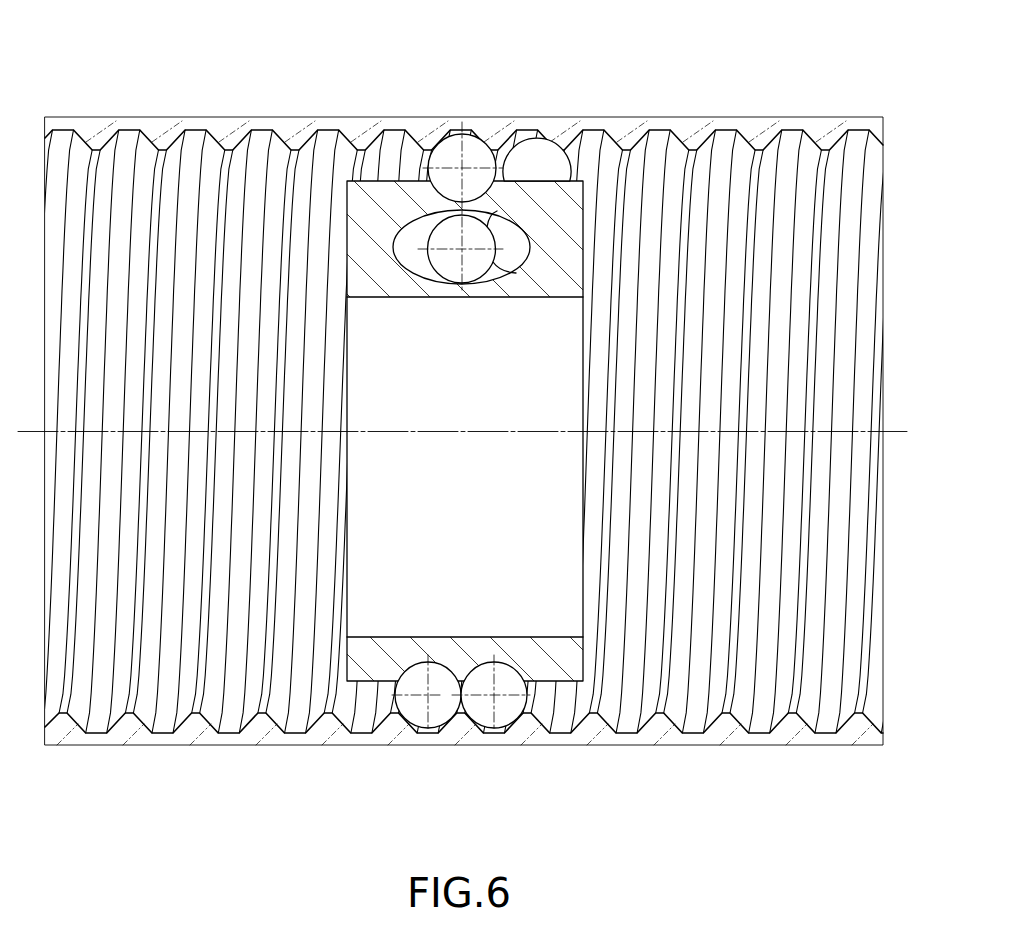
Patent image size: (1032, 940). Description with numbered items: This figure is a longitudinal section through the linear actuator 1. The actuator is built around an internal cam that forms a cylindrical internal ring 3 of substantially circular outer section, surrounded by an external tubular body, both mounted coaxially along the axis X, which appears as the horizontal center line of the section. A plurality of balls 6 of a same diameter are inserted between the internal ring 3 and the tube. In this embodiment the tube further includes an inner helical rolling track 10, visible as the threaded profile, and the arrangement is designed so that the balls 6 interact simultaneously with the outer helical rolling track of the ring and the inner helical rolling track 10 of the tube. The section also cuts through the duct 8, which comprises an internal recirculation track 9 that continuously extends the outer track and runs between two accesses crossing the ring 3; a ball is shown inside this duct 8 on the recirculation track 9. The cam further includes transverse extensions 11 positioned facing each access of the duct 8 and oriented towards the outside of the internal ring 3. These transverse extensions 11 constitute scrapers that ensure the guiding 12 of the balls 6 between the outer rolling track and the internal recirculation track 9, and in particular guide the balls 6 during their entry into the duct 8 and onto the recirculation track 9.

The linear actuator 1 is at (620, 793).
The internal ring 3 is at (718, 730).
The balls 6 is at (478, 705).
The duct 8 is at (447, 155).
The internal recirculation track 9 is at (418, 247).
The inner helical rolling track 10 is at (163, 643).
The transverse extensions 11 is at (505, 106).
The guiding 12 is at (462, 168).
The axis X is at (884, 431).